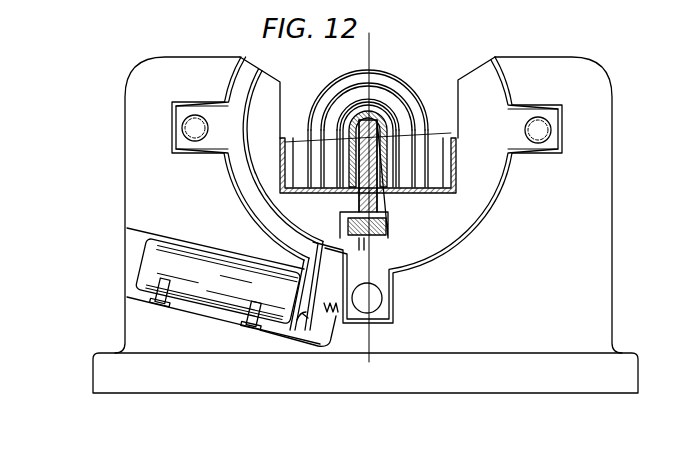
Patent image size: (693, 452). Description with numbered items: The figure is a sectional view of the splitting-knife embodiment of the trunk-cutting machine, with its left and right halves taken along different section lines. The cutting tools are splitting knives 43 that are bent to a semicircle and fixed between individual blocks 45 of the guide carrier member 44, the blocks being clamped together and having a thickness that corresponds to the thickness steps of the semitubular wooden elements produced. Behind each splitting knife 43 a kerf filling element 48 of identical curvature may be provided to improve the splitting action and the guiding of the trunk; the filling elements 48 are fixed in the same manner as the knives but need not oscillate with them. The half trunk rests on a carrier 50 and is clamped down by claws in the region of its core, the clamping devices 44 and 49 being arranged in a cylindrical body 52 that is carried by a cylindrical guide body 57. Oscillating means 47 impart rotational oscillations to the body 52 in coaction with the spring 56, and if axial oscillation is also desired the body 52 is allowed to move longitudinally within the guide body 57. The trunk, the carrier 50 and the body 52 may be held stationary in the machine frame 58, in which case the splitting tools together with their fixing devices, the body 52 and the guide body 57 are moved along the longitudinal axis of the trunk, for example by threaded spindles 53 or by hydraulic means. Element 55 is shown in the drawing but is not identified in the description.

The splitting knife 43 is at (338, 84).
The guide carrier member 44 is at (330, 139).
The individual blocks 45 is at (408, 187).
The oscillating means 47 is at (150, 263).
The kerf filling element 48 is at (380, 84).
The clamping device 49 is at (427, 137).
The carrier 50 is at (365, 201).
The cylindrical body 52 is at (274, 74).
The threaded spindle 53 is at (206, 127).
The chute outlet 55 is at (300, 322).
The spring 56 is at (335, 318).
The cylindrical guide body 57 is at (249, 62).
The machine frame 58 is at (512, 299).